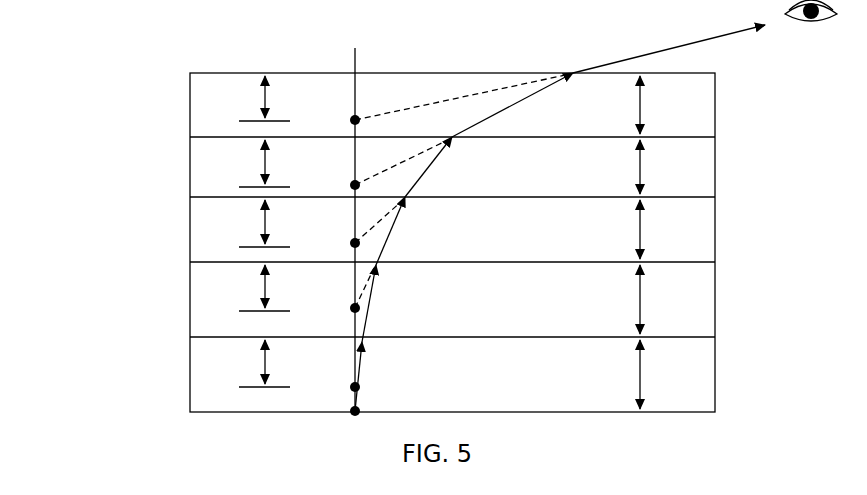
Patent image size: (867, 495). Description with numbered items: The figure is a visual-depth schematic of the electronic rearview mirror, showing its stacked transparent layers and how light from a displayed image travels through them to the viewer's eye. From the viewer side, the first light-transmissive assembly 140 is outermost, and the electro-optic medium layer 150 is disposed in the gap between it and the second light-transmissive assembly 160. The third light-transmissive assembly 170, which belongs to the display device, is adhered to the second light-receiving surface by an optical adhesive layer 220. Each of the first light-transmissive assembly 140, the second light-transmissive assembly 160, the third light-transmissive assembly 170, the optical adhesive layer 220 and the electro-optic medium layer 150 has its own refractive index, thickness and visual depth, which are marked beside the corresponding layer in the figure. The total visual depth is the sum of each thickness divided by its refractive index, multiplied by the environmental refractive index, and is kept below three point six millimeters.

The first light-transmissive assembly 140 is at (205, 112).
The electro-optic medium layer 150 is at (205, 183).
The second light-transmissive assembly 160 is at (203, 238).
The optical adhesive layer 220 is at (207, 312).
The third light-transmissive assembly 170 is at (205, 385).